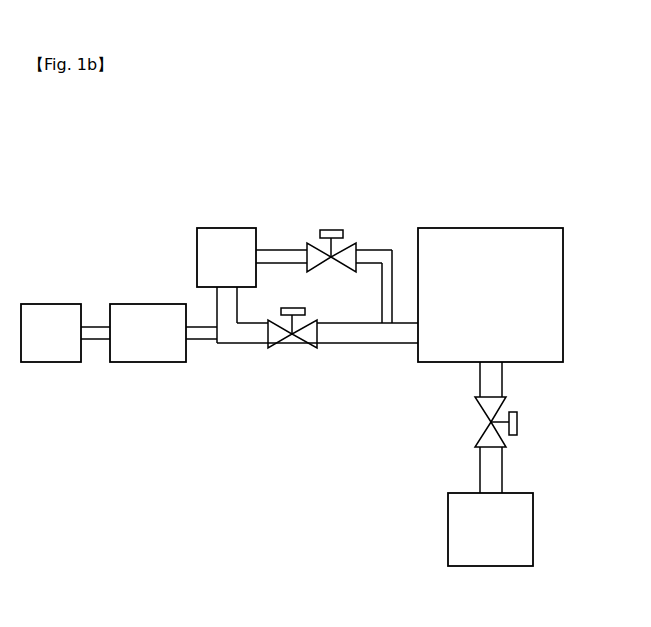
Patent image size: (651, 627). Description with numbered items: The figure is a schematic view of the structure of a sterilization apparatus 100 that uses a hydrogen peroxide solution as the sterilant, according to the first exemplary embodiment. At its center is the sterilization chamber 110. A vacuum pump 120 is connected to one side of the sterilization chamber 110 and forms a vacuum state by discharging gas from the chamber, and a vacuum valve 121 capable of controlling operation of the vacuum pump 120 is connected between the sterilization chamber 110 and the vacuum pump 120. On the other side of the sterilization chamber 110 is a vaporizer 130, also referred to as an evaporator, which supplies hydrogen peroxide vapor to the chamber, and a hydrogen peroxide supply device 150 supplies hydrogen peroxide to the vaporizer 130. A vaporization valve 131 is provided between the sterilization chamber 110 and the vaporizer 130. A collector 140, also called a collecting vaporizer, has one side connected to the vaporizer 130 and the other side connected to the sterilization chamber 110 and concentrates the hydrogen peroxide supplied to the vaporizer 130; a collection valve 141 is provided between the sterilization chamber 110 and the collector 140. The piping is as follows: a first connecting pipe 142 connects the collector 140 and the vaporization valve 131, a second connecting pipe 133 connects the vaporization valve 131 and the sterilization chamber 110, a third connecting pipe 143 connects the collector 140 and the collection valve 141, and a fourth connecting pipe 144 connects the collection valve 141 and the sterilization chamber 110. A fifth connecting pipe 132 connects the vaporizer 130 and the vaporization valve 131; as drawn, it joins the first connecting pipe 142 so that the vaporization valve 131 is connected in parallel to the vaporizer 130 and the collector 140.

The sterilization apparatus 100 is at (548, 162).
The sterilization chamber 110 is at (490, 295).
The vacuum pump 120 is at (490, 529).
The vacuum valve 121 is at (528, 419).
The vaporizer 130 is at (148, 333).
The vaporization valve 131 is at (294, 352).
The fifth connecting pipe 132 is at (199, 342).
The second connecting pipe 133 is at (356, 345).
The collector 140 is at (226, 257).
The collection valve 141 is at (350, 233).
The first connecting pipe 142 is at (220, 312).
The third connecting pipe 143 is at (285, 250).
The fourth connecting pipe 144 is at (380, 295).
The hydrogen peroxide supply device 150 is at (51, 333).